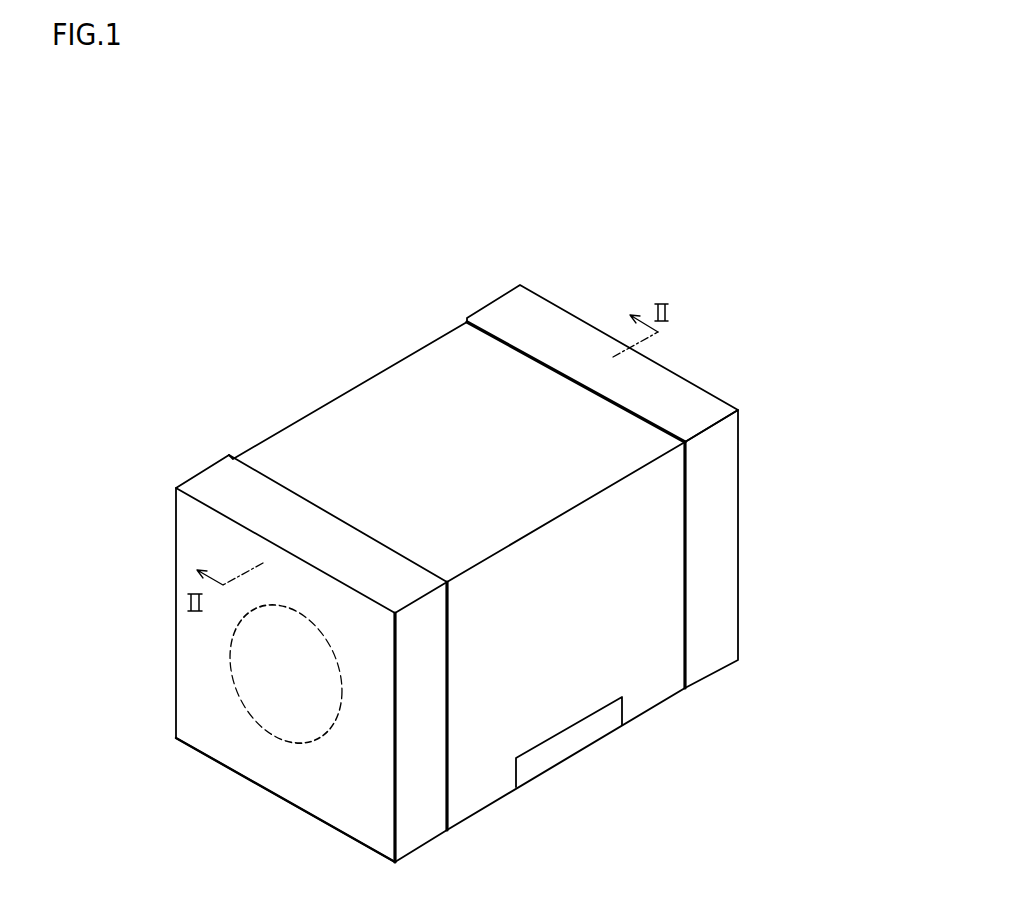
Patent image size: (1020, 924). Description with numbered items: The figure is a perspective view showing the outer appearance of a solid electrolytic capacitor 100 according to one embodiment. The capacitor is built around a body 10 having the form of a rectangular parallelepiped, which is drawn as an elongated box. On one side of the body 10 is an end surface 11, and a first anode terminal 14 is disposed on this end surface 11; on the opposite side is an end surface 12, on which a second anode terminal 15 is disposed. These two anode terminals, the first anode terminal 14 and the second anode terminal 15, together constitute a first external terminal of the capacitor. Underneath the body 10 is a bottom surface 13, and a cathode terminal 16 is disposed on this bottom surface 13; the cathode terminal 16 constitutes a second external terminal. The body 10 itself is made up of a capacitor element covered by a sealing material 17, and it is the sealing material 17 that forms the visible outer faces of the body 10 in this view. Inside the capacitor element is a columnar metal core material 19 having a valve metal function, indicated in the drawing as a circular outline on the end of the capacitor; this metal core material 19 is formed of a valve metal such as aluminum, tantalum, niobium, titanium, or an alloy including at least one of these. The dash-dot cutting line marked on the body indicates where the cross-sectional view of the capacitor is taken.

The solid electrolytic capacitor 100 is at (227, 235).
The body 10 is at (402, 362).
The end surface 11 is at (367, 757).
The end surface 12 is at (708, 592).
The bottom surface 13 is at (478, 782).
The first anode terminal 14 is at (262, 757).
The second anode terminal 15 is at (708, 403).
The cathode terminal 16 is at (593, 733).
The sealing material 17 is at (325, 430).
The metal core material 19 is at (232, 662).